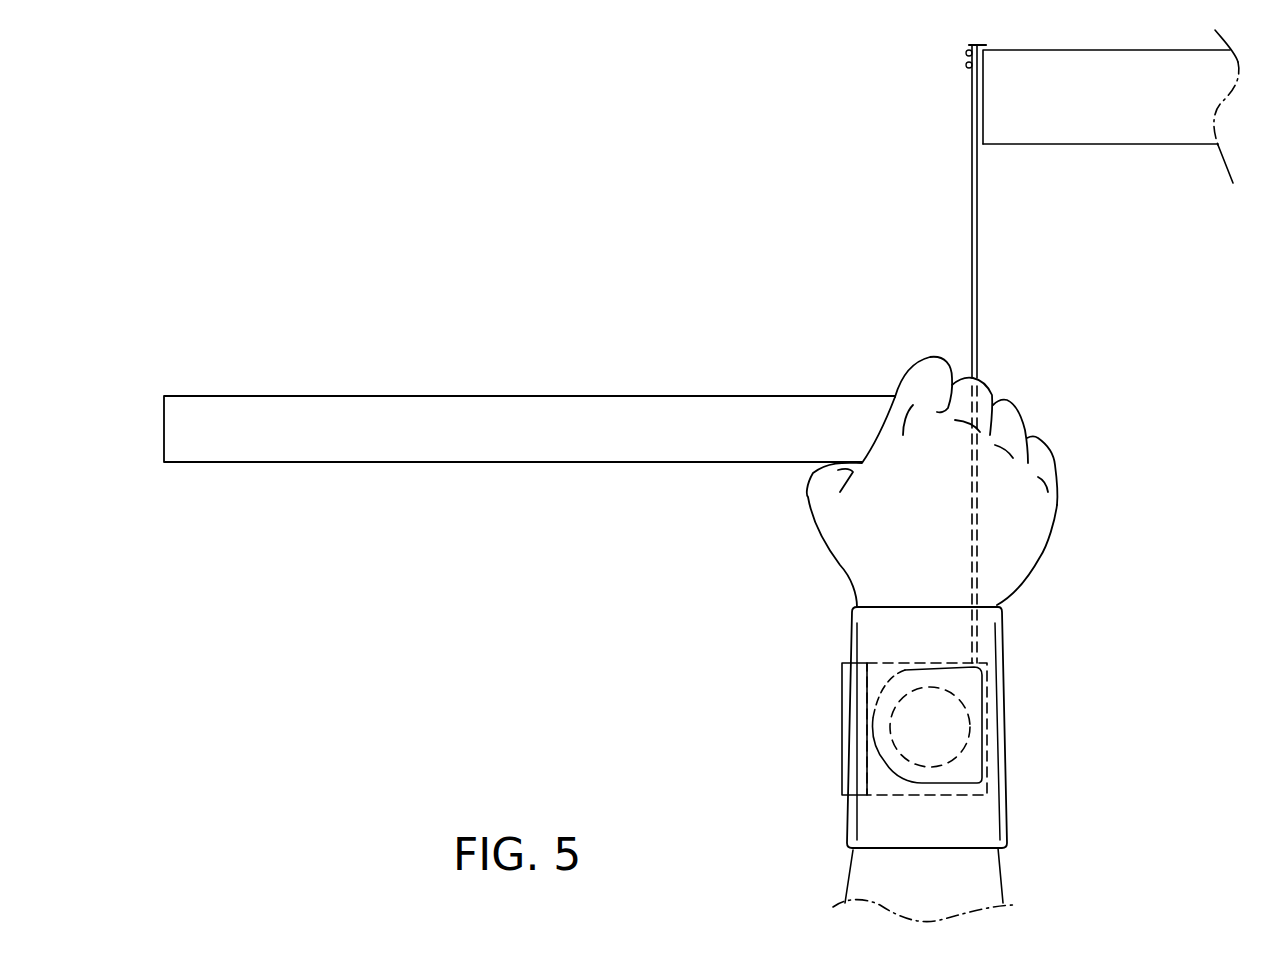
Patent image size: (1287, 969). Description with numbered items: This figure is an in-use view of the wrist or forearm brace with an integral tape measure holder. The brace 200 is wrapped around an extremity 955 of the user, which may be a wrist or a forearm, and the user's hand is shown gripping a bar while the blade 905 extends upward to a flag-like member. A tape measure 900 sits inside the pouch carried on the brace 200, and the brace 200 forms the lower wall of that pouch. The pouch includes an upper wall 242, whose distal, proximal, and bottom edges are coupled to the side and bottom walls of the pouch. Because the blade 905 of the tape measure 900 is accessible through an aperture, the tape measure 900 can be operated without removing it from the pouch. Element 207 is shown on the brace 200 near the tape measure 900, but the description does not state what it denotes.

The blade 905 is at (973, 222).
The brace 200 is at (987, 634).
The strap 207 is at (880, 645).
The tape measure 900 is at (873, 723).
The upper wall 242 is at (878, 797).
The extremity 955 is at (982, 880).